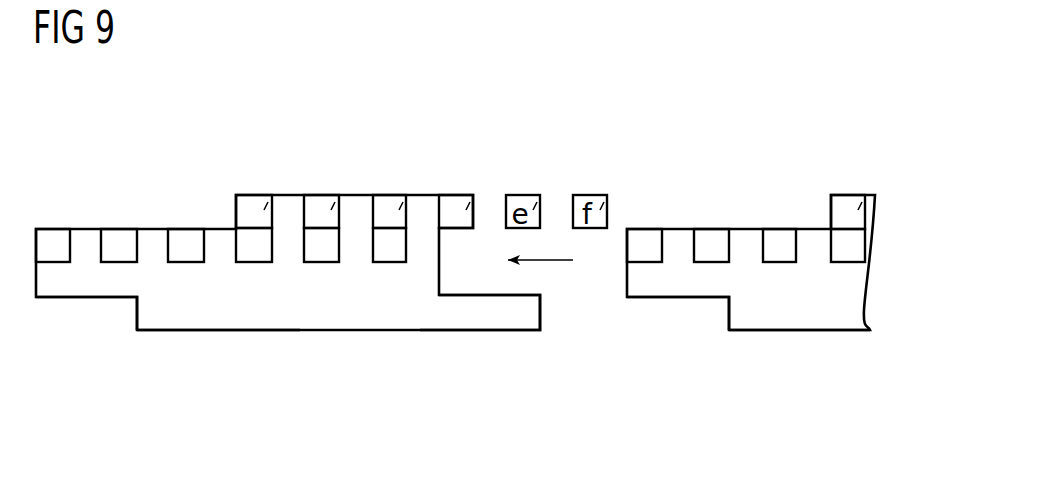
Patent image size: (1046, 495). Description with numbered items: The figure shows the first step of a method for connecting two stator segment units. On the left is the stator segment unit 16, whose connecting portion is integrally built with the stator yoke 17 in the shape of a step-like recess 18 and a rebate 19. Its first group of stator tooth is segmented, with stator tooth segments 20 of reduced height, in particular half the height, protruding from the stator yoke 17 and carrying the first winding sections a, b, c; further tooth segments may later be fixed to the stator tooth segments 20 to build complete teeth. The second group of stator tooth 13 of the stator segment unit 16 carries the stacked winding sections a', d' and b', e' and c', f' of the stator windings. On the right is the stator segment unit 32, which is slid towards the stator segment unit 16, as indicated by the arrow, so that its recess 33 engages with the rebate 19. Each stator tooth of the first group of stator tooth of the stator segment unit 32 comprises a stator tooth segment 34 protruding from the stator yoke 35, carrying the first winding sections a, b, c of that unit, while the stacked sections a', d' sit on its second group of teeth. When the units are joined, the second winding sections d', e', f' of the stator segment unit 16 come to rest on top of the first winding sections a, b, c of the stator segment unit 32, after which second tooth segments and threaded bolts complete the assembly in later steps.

The stator segment unit 16 is at (288, 257).
The stator tooth segments 20 is at (85, 245).
The stator tooth 13 is at (292, 243).
The stator yoke 17 is at (195, 315).
The step-like recess 18 is at (116, 315).
The rebate 19 is at (490, 310).
The stator segment unit 32 is at (751, 254).
The stator tooth segment 34 is at (675, 245).
The recess 33 is at (700, 320).
The stator yoke 35 is at (842, 295).